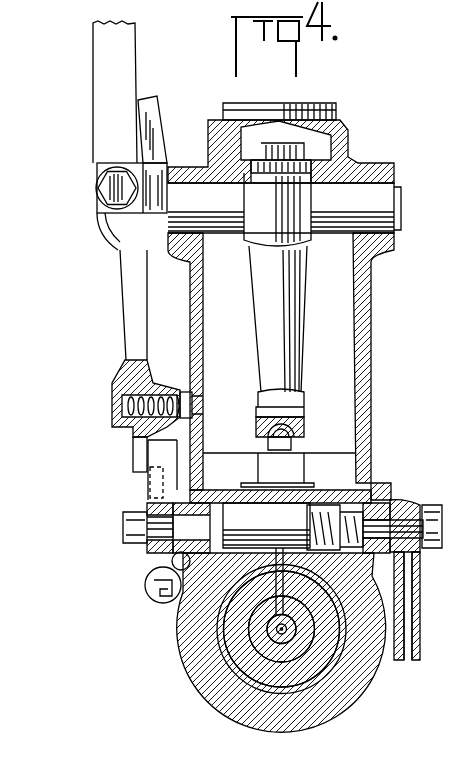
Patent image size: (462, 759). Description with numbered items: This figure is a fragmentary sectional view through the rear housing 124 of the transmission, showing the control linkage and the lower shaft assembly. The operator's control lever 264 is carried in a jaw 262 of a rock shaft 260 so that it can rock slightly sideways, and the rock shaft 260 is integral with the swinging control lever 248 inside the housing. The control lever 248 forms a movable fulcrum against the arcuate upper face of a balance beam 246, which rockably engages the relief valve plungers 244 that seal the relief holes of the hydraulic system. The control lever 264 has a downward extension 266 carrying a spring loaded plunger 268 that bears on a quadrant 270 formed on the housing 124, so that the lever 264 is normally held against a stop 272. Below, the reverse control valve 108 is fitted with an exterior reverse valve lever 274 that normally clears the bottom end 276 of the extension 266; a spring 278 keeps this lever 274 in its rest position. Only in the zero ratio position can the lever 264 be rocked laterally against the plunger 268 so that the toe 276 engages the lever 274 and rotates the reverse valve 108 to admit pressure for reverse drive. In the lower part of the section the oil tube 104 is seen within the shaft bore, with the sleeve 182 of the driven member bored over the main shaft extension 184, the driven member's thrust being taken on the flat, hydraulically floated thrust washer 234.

The oil tube 104 is at (282, 616).
The reverse control valve 108 is at (266, 559).
The rear housing 124 is at (202, 314).
The sleeve 182 is at (215, 625).
The extension of the main shaft 184 is at (303, 640).
The thrust washer 234 is at (230, 648).
The relief valve plunger 244 is at (285, 446).
The balance beam 246 is at (256, 430).
The control lever 248 is at (300, 310).
The rock shaft 260 is at (390, 196).
The jaw 262 is at (95, 189).
The operator's control lever 264 is at (100, 56).
The downward extension 266 is at (128, 300).
The spring loaded plunger 268 is at (158, 388).
The quadrant 270 is at (203, 392).
The stop 272 is at (150, 102).
The reverse valve lever 274 is at (148, 487).
The bottom end 276 is at (140, 452).
The spring 278 is at (145, 585).